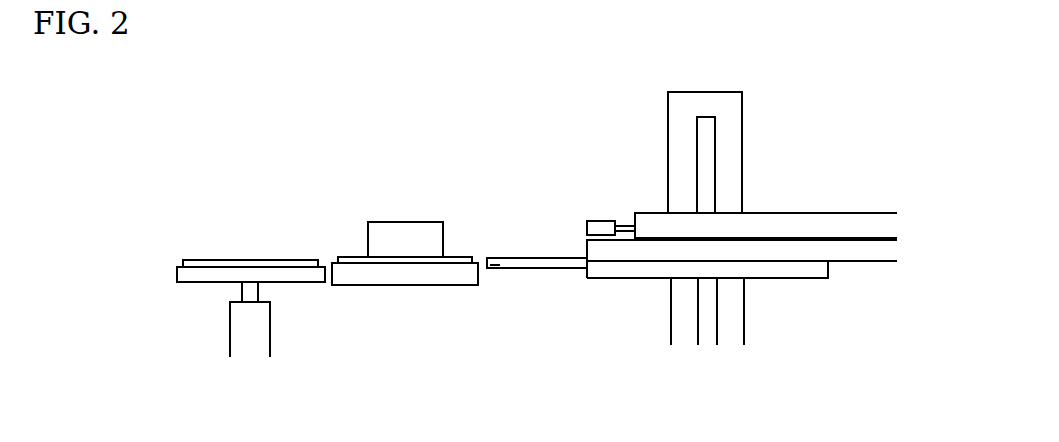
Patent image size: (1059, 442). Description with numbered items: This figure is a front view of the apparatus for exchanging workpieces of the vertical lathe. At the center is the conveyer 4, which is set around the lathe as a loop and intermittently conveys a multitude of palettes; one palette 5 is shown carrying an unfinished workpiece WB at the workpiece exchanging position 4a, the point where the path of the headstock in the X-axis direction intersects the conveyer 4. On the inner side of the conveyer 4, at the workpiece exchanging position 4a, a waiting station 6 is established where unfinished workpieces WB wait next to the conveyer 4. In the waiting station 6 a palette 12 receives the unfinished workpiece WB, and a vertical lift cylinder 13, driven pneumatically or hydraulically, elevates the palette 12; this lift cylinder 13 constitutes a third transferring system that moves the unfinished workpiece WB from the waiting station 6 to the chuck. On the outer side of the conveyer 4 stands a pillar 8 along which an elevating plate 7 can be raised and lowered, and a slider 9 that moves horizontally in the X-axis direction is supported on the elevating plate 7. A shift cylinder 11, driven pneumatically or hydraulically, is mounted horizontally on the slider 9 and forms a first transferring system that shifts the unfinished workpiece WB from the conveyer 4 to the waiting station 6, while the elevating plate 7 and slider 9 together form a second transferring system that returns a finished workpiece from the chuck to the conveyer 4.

The conveyer 4 is at (430, 277).
The workpiece exchanging position 4a is at (350, 242).
The palette 5 is at (455, 257).
The unfinished workpiece WB is at (407, 222).
The waiting station 6 is at (175, 278).
The elevating plate 7 is at (800, 270).
The pillar 8 is at (733, 110).
The slider 9 is at (620, 257).
The shift cylinder 11 is at (857, 222).
The palette 12 is at (195, 260).
The lift cylinder 13 is at (238, 325).